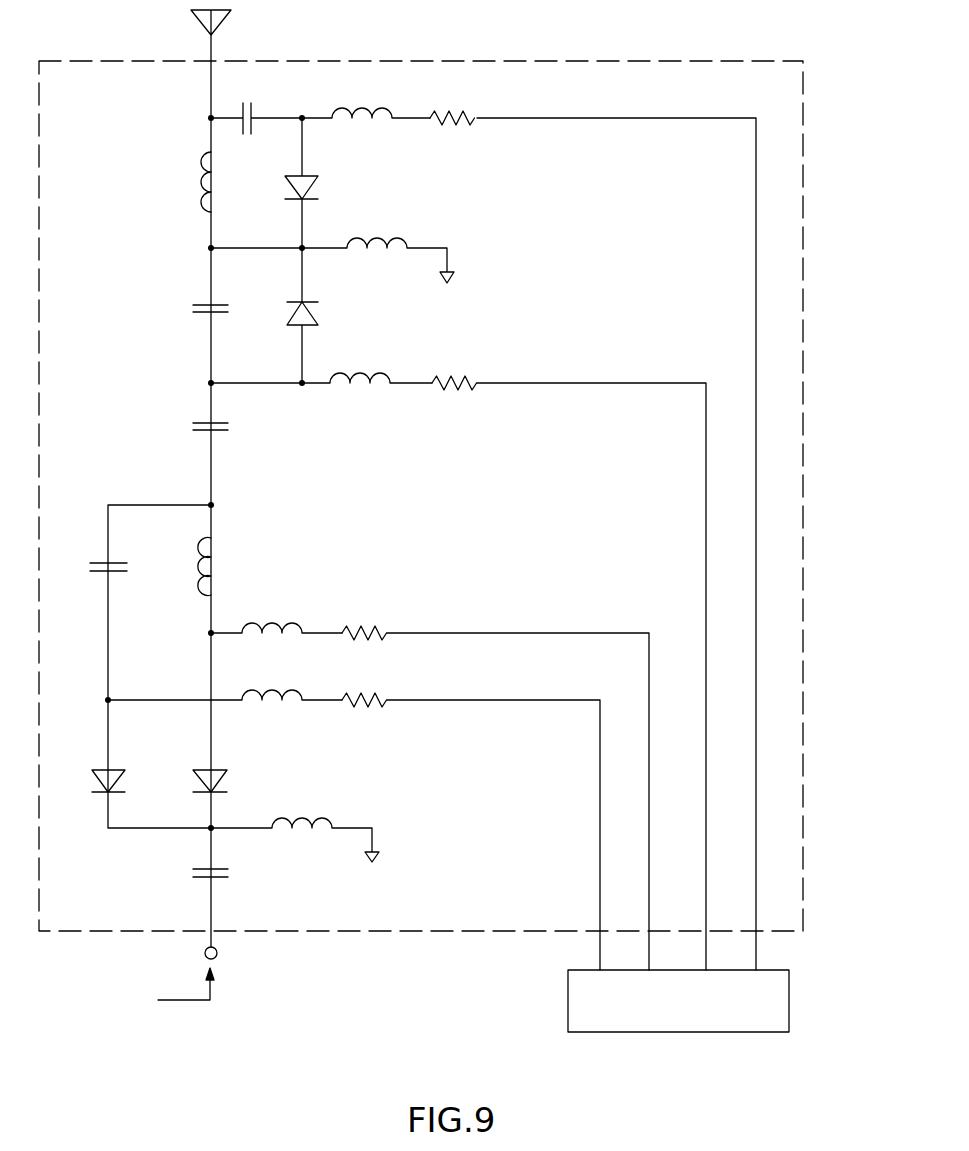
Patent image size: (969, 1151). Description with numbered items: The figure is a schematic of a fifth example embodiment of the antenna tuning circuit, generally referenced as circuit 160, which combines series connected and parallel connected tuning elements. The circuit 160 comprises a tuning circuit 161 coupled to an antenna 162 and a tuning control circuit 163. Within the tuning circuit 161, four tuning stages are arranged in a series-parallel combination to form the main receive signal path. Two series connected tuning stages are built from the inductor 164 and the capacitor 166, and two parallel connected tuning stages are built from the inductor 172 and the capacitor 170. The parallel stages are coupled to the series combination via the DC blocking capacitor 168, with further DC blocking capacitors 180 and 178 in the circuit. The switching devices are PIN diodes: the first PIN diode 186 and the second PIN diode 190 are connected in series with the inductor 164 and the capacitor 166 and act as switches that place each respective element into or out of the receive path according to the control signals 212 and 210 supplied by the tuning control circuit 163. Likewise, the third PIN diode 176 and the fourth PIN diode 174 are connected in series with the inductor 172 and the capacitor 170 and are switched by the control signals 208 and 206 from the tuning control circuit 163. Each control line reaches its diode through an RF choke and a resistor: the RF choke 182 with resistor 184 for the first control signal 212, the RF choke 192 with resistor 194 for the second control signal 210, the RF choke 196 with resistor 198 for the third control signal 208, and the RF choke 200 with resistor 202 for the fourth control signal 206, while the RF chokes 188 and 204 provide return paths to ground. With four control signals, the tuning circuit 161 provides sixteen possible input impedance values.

The circuit 160 is at (307, 1004).
The tuning circuit 161 is at (333, 932).
The antenna 162 is at (222, 25).
The tuning control circuit 163 is at (789, 1000).
The inductor L0 164 is at (197, 190).
The capacitor C0 166 is at (203, 315).
The DC blocking capacitor C 168 is at (205, 433).
The capacitor C3 170 is at (100, 577).
The inductor L2 172 is at (200, 575).
The PIN diode D3 174 is at (100, 765).
The PIN diode D2 176 is at (205, 765).
The DC blocking capacitor C 178 is at (205, 880).
The DC blocking capacitor C 180 is at (250, 115).
The RF choke L 182 is at (380, 112).
The resistor R 184 is at (473, 122).
The PIN diode D0 186 is at (308, 175).
The RF choke L 188 is at (395, 243).
The PIN diode D1 190 is at (313, 313).
The RF choke L 192 is at (365, 393).
The resistor R 194 is at (458, 393).
The RF choke L 196 is at (290, 620).
The resistor R 198 is at (382, 638).
The RF choke L 200 is at (272, 705).
The resistor R 202 is at (363, 705).
The RF choke L 204 is at (318, 818).
The control signal Control3 206 is at (600, 840).
The control signal Control2 208 is at (649, 800).
The control signal Control1 210 is at (706, 533).
The control signal Control0 212 is at (756, 235).